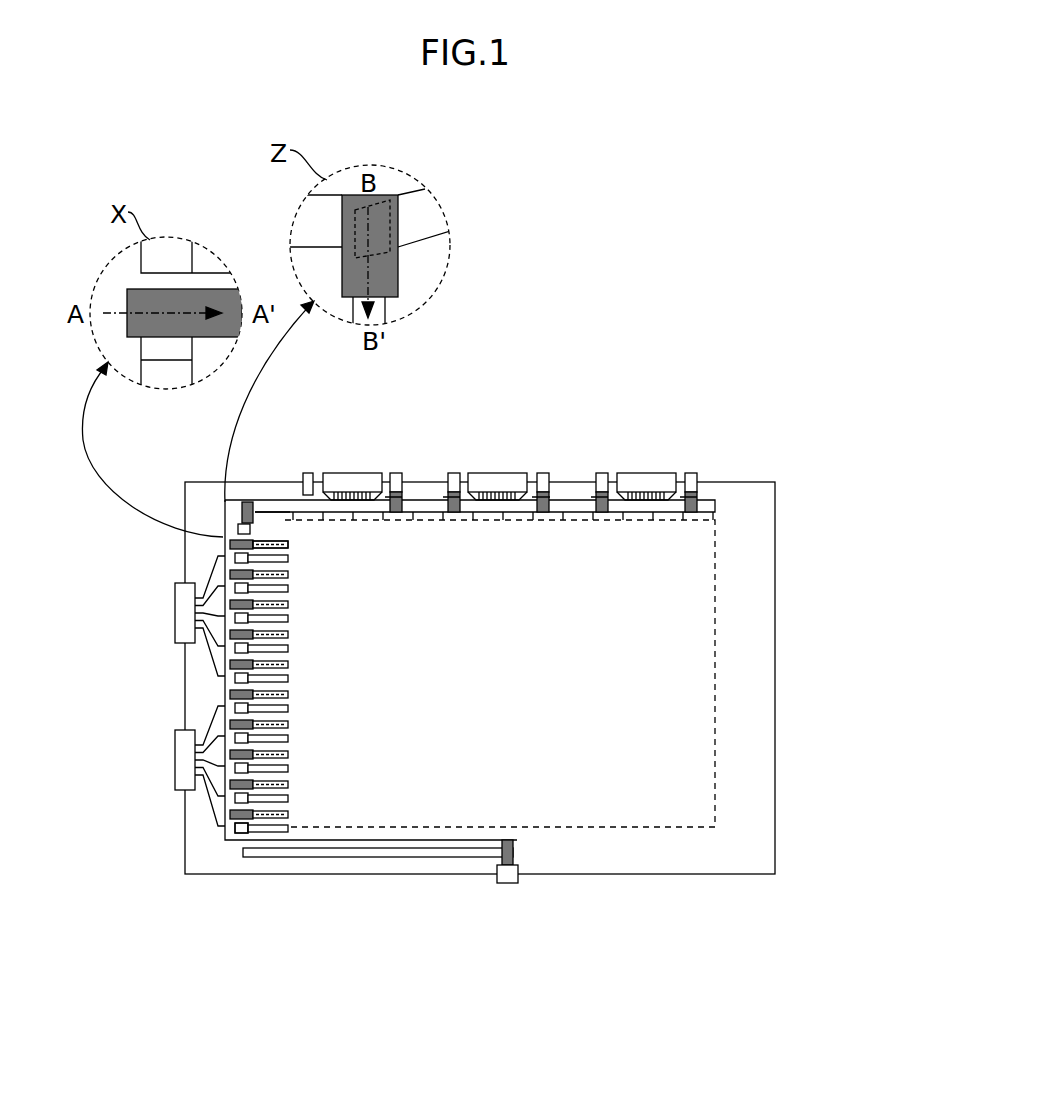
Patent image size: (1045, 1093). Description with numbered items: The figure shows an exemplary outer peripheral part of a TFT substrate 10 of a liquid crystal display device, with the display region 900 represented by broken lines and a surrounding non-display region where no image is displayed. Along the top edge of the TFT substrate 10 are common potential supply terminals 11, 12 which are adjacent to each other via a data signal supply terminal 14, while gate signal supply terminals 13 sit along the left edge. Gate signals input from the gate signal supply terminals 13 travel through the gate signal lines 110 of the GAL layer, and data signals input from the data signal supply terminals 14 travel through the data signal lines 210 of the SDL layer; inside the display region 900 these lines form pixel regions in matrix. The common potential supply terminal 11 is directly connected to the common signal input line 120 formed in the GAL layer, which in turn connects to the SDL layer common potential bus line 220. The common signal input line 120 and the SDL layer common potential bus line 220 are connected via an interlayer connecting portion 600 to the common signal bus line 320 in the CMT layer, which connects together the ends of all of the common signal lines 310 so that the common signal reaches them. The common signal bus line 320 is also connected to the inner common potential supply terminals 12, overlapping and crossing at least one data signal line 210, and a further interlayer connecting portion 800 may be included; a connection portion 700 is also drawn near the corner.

The TFT substrate 10 is at (670, 893).
The common potential supply terminal 11 is at (308, 472).
The common potential supply terminal 12 is at (397, 472).
The gate signal supply terminal 13 is at (175, 612).
The data signal supply terminal 14 is at (372, 472).
The gate signal line 110 is at (272, 548).
The common signal input line 120 is at (291, 497).
The data signal line 210 is at (715, 516).
The SDL layer common potential bus line 220 is at (232, 797).
The common signal line 310 is at (273, 805).
The common signal bus line 320 is at (225, 843).
The interlayer connecting portion 600 is at (223, 543).
The connection portion 700 is at (223, 505).
The interlayer connecting portion 800 is at (728, 374).
The display region 900 is at (565, 828).